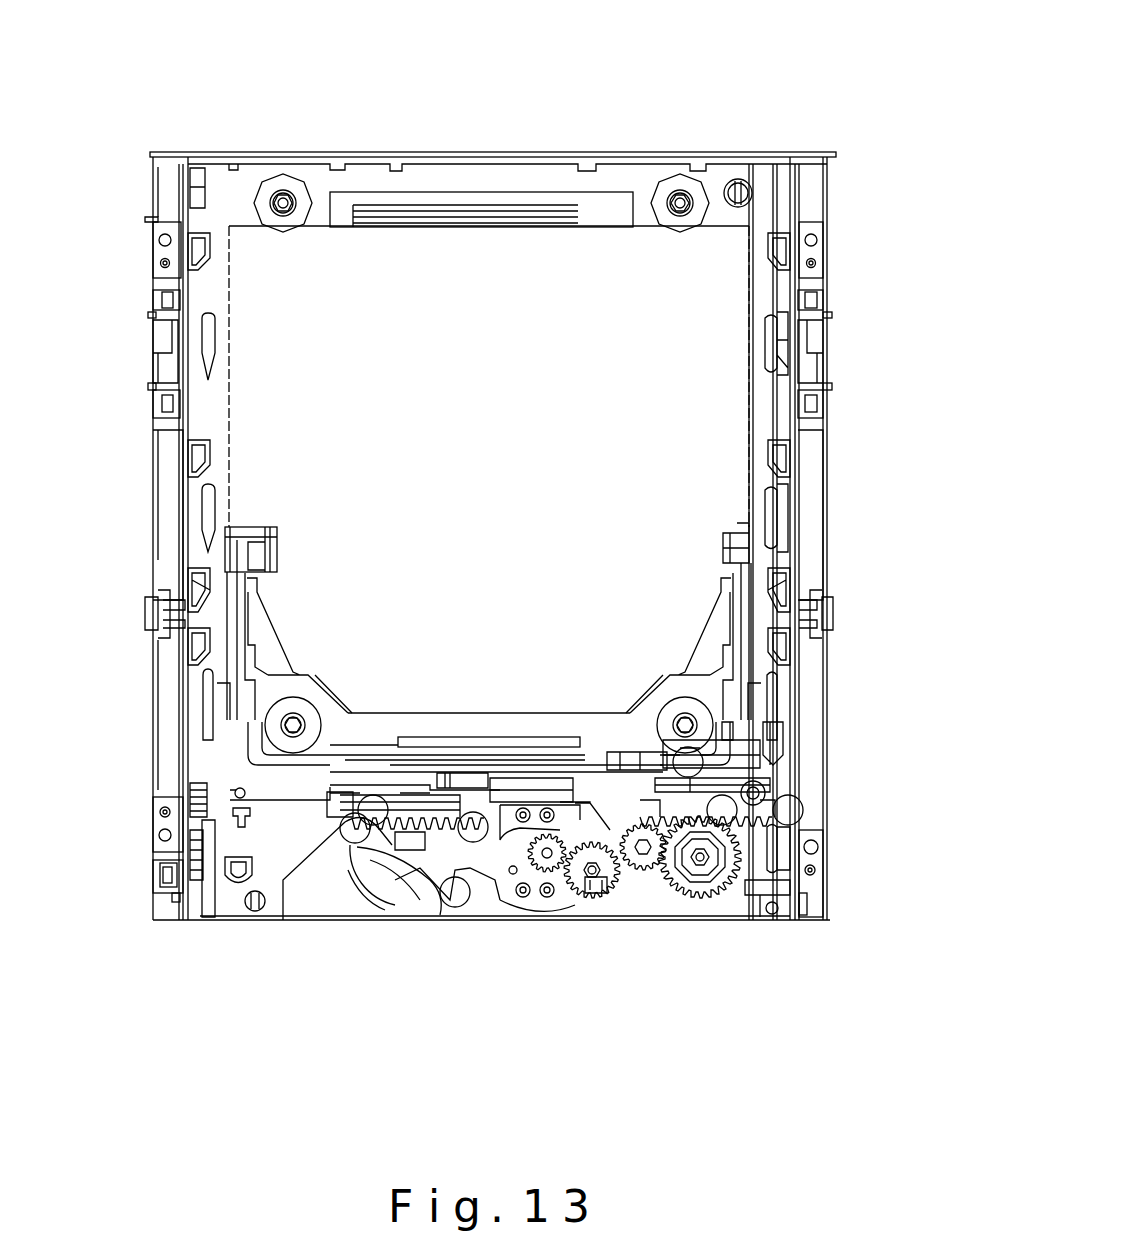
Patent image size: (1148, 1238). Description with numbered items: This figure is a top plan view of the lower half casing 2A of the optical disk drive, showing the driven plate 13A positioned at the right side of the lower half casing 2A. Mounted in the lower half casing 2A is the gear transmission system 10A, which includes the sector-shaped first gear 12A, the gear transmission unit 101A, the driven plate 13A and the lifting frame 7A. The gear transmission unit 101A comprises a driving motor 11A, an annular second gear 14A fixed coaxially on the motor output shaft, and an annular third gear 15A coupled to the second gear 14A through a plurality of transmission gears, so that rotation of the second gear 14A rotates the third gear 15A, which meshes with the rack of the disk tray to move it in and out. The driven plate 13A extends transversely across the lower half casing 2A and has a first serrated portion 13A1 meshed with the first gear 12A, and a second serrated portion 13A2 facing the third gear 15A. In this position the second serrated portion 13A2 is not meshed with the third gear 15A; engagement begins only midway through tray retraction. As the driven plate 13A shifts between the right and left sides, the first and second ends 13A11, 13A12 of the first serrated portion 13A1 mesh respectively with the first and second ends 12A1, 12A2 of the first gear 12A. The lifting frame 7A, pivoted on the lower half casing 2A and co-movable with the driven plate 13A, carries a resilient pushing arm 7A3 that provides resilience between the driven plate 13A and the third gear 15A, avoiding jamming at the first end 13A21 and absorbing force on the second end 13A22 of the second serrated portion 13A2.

The lower half casing 2A is at (392, 133).
The lifting frame 7A is at (338, 732).
The resilient pushing arm 7A3 is at (685, 778).
The gear transmission system 10A is at (537, 1075).
The driving motor 11A is at (519, 887).
The sector-shaped first gear 12A is at (423, 862).
The first end of the first gear 12A1 is at (406, 840).
The second end of the first gear 12A2 is at (472, 905).
The driven plate 13A is at (571, 802).
The first serrated portion 13A1 is at (423, 810).
The first end of the first serrated portion 13A11 is at (348, 840).
The second end of the first serrated portion 13A12 is at (468, 842).
The second serrated portion 13A2 is at (756, 832).
The first end of the second serrated portion 13A21 is at (716, 826).
The second end of the second serrated portion 13A22 is at (786, 826).
The annular second gear 14A is at (545, 866).
The annular third gear 15A is at (730, 872).
The gear transmission unit 101A is at (537, 1055).